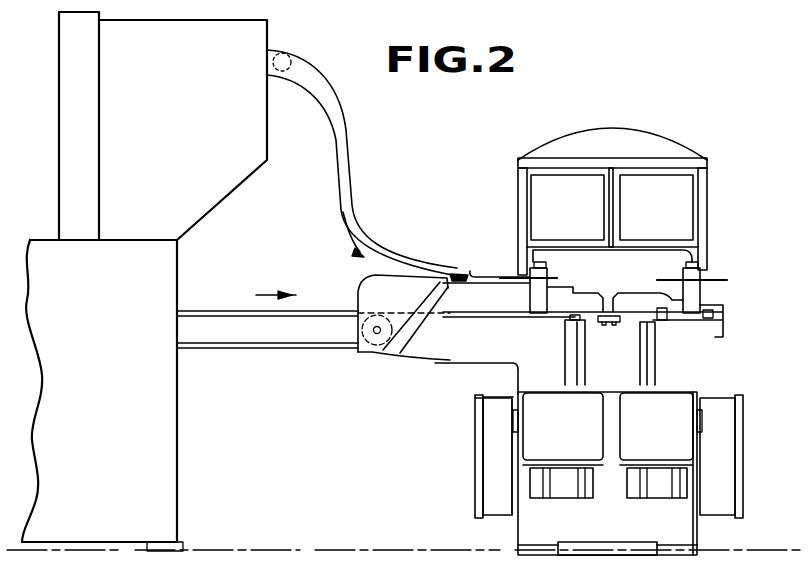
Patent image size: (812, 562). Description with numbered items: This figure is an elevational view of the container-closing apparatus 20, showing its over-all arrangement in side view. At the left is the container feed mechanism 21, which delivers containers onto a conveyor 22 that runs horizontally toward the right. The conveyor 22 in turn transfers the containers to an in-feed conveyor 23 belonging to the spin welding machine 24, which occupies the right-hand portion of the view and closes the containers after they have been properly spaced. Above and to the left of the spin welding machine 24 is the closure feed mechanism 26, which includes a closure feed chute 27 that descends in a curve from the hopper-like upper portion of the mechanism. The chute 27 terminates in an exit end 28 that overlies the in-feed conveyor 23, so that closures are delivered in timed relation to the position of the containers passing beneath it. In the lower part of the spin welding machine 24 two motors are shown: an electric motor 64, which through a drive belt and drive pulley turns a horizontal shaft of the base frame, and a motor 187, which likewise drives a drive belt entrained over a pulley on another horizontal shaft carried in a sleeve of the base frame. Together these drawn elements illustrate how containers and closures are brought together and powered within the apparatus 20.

The apparatus 20 is at (415, 192).
The container feed mechanism 21 is at (157, 421).
The conveyor 22 is at (200, 310).
The in-feed conveyor 23 is at (438, 350).
The spin welding machine 24 is at (596, 341).
The closure feed mechanism 26 is at (232, 190).
The closure feed chute 27 is at (347, 134).
The exit end 28 is at (456, 266).
The electric motor 64 is at (530, 440).
The motor 187 is at (660, 407).